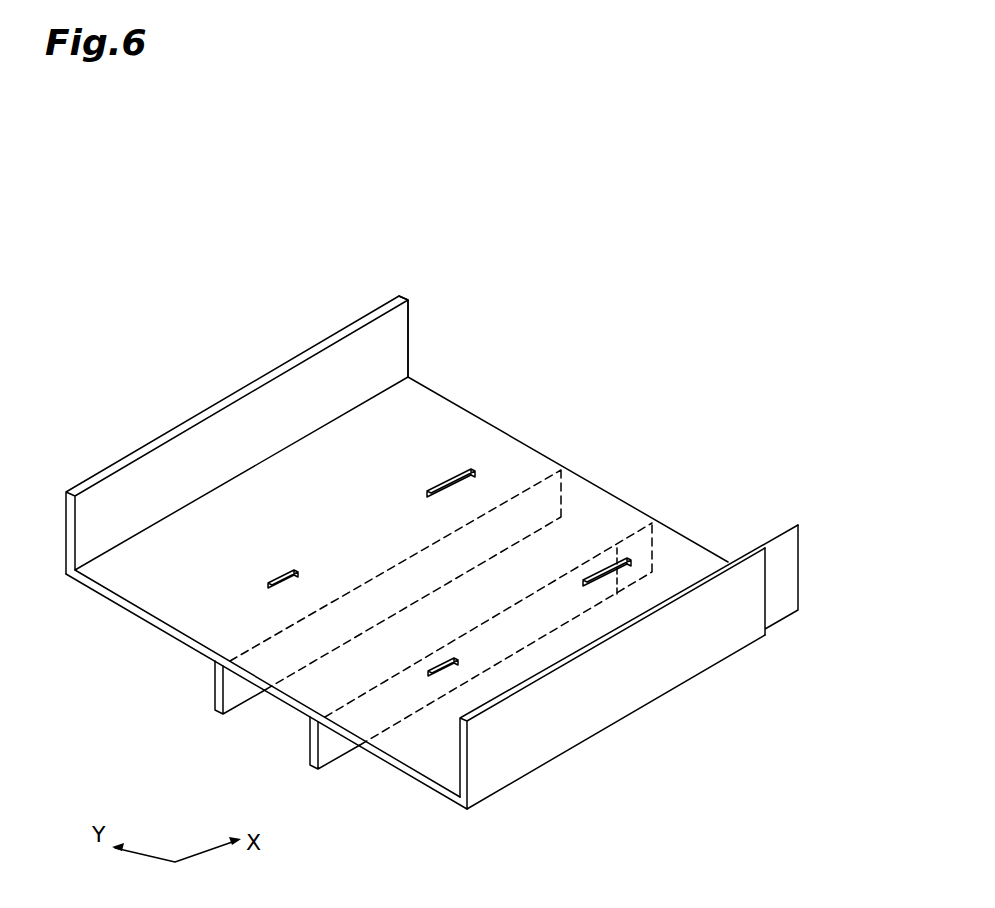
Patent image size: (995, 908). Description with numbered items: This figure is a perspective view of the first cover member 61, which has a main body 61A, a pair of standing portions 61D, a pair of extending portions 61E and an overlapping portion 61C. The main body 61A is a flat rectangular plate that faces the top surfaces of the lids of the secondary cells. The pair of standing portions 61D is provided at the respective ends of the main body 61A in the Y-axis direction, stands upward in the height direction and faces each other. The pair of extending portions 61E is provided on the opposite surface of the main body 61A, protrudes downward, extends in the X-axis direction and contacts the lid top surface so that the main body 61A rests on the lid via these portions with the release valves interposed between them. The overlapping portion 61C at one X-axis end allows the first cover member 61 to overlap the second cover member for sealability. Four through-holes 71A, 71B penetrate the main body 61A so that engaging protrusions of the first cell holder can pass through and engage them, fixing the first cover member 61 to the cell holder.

The first cover member 61 is at (470, 556).
The main body 61A is at (170, 601).
The overlapping portion 61C is at (390, 353).
The standing portion 61D is at (262, 403).
The extending portion 61E is at (231, 695).
The through-hole 71A is at (280, 580).
The through-hole 71B is at (432, 492).